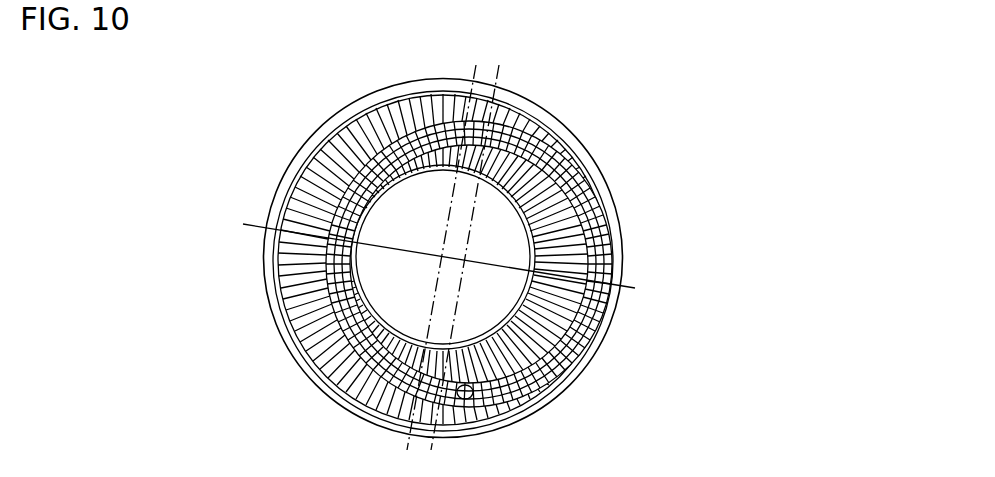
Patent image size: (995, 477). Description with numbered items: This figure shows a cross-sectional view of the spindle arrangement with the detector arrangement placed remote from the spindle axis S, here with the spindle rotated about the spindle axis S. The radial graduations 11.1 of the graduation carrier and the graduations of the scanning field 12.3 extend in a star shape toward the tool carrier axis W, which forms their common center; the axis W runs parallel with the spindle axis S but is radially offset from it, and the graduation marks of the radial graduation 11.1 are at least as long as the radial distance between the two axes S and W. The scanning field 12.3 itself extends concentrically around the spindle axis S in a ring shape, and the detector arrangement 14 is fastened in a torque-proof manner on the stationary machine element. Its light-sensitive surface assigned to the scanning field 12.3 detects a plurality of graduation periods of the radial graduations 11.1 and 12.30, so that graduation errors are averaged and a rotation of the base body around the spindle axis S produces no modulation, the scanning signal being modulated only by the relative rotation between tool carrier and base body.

The radial graduations 11.1 is at (545, 109).
The scanning field 12.3 is at (590, 180).
The radial graduations of the scanning field 12.30 is at (613, 297).
The detector arrangement 14 is at (498, 403).
The tool carrier axis W is at (441, 255).
The spindle axis S is at (466, 257).